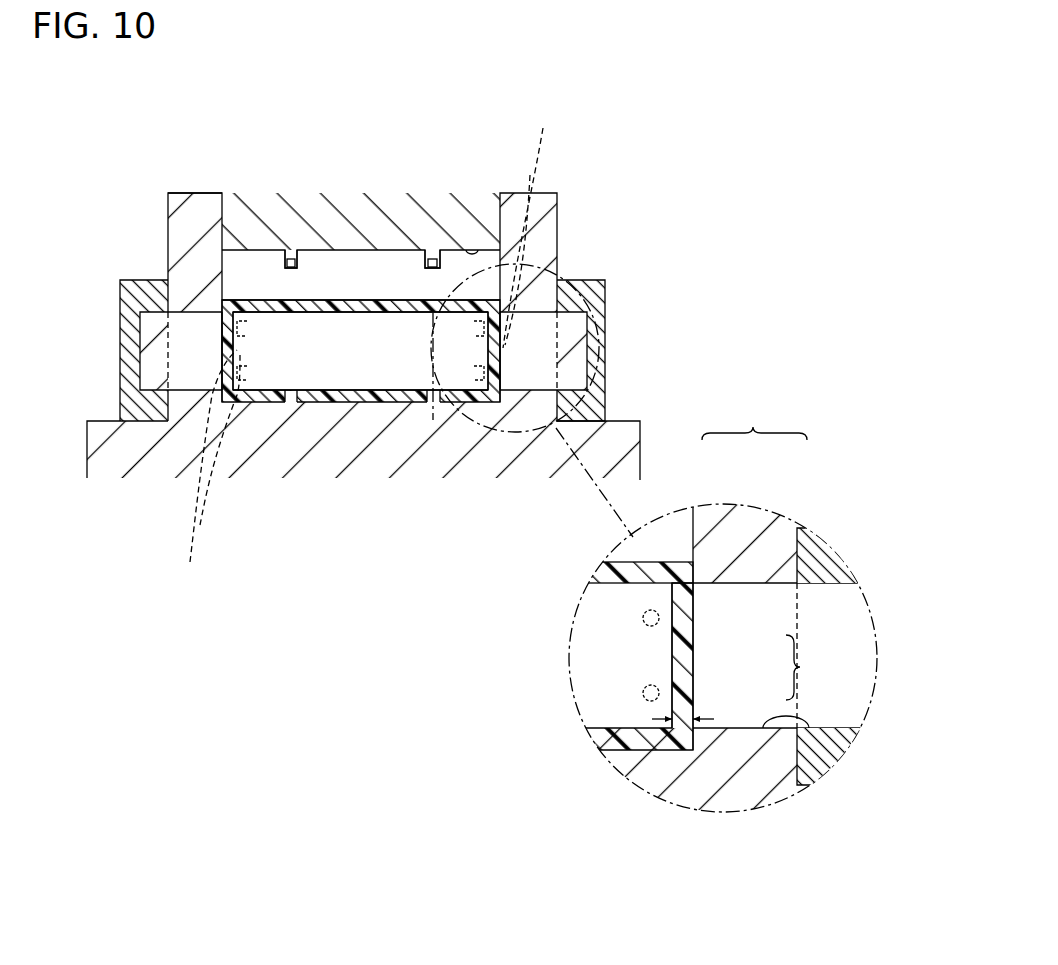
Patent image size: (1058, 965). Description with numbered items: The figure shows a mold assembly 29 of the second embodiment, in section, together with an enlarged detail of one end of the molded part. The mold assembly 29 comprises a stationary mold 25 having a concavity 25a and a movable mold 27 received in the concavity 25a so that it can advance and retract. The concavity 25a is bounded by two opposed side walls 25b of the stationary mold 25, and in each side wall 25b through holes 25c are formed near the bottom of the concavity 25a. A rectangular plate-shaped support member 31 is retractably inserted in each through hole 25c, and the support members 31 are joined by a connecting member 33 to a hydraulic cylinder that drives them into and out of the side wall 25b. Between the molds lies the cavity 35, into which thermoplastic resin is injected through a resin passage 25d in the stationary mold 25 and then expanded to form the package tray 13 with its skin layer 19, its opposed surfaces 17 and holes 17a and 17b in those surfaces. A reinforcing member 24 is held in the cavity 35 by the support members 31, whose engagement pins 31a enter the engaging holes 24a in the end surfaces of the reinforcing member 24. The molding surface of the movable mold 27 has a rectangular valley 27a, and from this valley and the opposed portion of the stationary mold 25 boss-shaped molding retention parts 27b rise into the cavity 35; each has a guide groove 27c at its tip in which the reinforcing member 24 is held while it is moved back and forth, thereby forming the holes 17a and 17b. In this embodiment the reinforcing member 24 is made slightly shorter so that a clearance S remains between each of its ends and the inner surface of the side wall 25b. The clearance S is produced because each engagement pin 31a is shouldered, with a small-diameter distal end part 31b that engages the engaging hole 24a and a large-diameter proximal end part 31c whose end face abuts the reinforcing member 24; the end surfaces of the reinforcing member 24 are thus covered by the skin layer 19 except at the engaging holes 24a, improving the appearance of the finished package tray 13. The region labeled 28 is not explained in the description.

The package tray 13 is at (360, 296).
The surfaces 17 is at (412, 294).
The holes 17a is at (320, 390).
The holes 17b is at (292, 300).
The skin layer 19 is at (392, 300).
The reinforcing member 24 is at (337, 400).
The engaging holes 24a is at (530, 748).
The stationary mold 25 is at (542, 460).
The concavity 25a is at (222, 225).
The side walls 25b is at (168, 256).
The through holes 25c is at (200, 313).
The resin passage 25d is at (366, 405).
The movable mold 27 is at (472, 249).
The rectangular valley 27a is at (483, 249).
The molding retention parts 27b is at (291, 250).
The guide groove 27c is at (292, 268).
The inner space 28 is at (281, 351).
The mold assembly 29 is at (630, 181).
The support member 31 is at (193, 392).
The engagement pins 31a is at (774, 548).
The small-diameter distal end part 31b is at (656, 610).
The large-diameter proximal end part 31c is at (658, 688).
The connecting member 33 is at (120, 298).
The cavity 35 is at (262, 403).
The clearance S is at (683, 723).